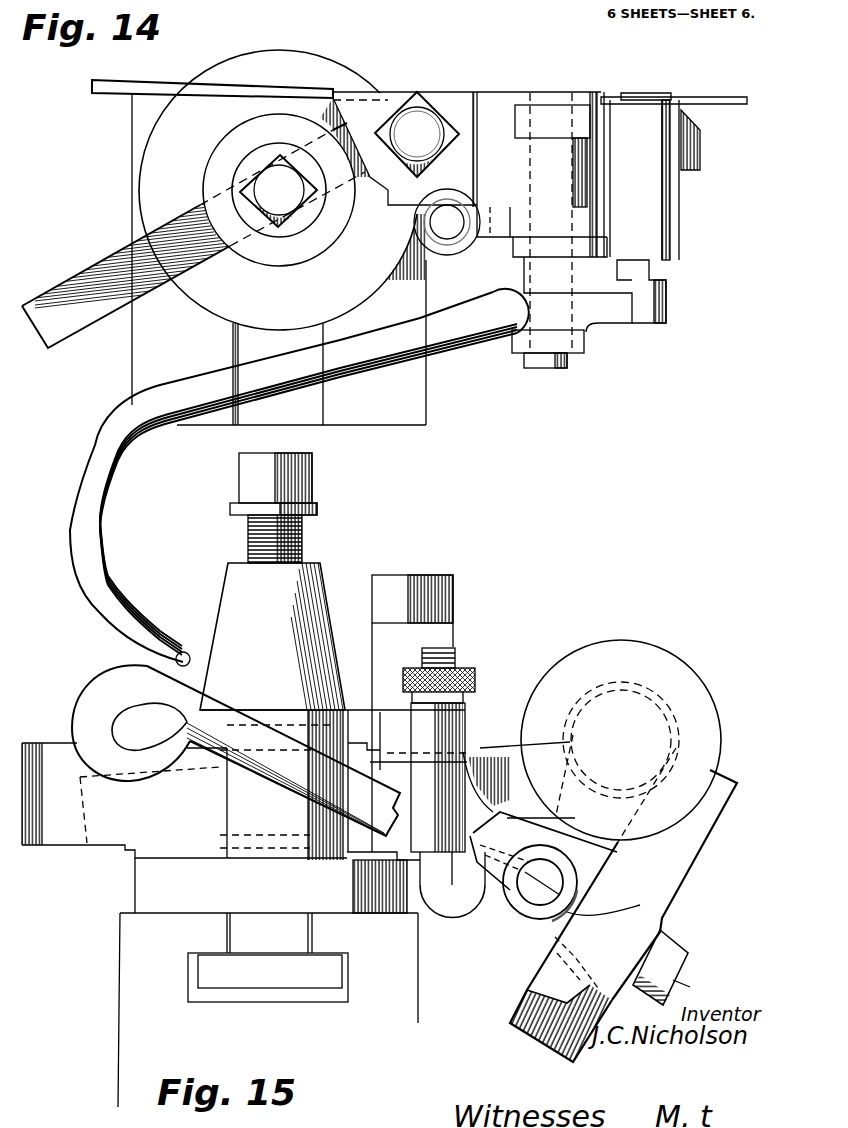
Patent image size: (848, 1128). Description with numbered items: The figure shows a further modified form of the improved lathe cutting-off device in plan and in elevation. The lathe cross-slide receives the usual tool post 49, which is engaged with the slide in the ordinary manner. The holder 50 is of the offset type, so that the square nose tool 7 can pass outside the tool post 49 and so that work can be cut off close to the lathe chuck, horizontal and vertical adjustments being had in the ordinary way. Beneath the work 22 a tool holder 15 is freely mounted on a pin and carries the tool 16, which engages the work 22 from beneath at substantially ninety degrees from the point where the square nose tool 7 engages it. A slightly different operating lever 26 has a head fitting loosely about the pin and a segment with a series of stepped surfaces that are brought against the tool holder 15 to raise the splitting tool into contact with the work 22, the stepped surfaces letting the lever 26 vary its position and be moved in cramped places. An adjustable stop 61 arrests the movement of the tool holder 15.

In FIG. 15, the square nose tool 7 is at (128, 963).
In FIG. 15, the tool holder 15 is at (667, 934).
In FIG. 14, the tool 16 is at (730, 108).
In FIG. 15, the tool 16 is at (688, 870).
In FIG. 15, the work 22 is at (712, 706).
In FIG. 14, the operating lever 26 is at (448, 338).
In FIG. 15, the operating lever 26 is at (218, 708).
In FIG. 14, the tool post 49 is at (268, 258).
In FIG. 15, the tool post 49 is at (222, 596).
In FIG. 14, the holder 50 is at (60, 335).
In FIG. 15, the stop 61 is at (468, 907).